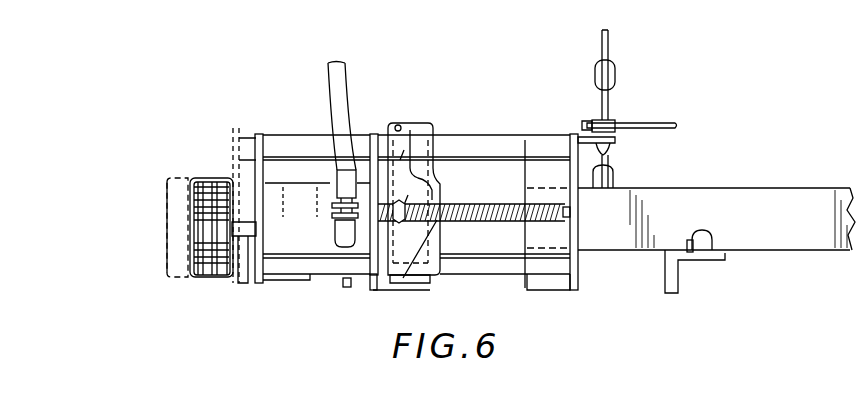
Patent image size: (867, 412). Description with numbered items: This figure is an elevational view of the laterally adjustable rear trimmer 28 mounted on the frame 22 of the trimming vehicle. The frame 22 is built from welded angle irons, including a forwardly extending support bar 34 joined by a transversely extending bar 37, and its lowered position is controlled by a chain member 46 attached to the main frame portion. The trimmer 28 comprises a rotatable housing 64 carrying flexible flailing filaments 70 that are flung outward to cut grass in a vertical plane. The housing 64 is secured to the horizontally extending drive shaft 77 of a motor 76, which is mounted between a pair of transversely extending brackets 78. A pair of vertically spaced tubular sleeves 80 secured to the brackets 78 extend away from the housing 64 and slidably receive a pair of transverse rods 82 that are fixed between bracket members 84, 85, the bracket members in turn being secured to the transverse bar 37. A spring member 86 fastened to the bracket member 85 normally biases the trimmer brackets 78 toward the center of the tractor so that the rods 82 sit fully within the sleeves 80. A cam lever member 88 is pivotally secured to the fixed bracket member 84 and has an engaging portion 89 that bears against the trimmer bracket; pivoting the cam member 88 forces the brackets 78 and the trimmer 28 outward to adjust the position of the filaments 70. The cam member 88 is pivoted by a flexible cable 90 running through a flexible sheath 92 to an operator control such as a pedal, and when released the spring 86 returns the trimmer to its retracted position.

The frame member 22 is at (642, 181).
The third trimmer 28 is at (218, 177).
The support member or bar 34 is at (668, 277).
The transversely extending bar or strap 37 is at (685, 244).
The chain member 46 is at (615, 80).
The rotatable head or housing 64 is at (195, 242).
The flexible flailing element 70 is at (213, 178).
The motor 76 is at (318, 187).
The drive shaft 77 is at (248, 283).
The transversely extending bracket 78 is at (263, 196).
The tubular sleeve 80 is at (281, 143).
The rod or bar 82 is at (513, 145).
The bracket member 84 is at (423, 147).
The bracket member 85 is at (579, 256).
The spring member 86 is at (505, 222).
The cam lever member 88 is at (350, 287).
The engaging portion 89 is at (348, 247).
The flexible cable 90 is at (480, 134).
The flexible sheath 92 is at (636, 123).